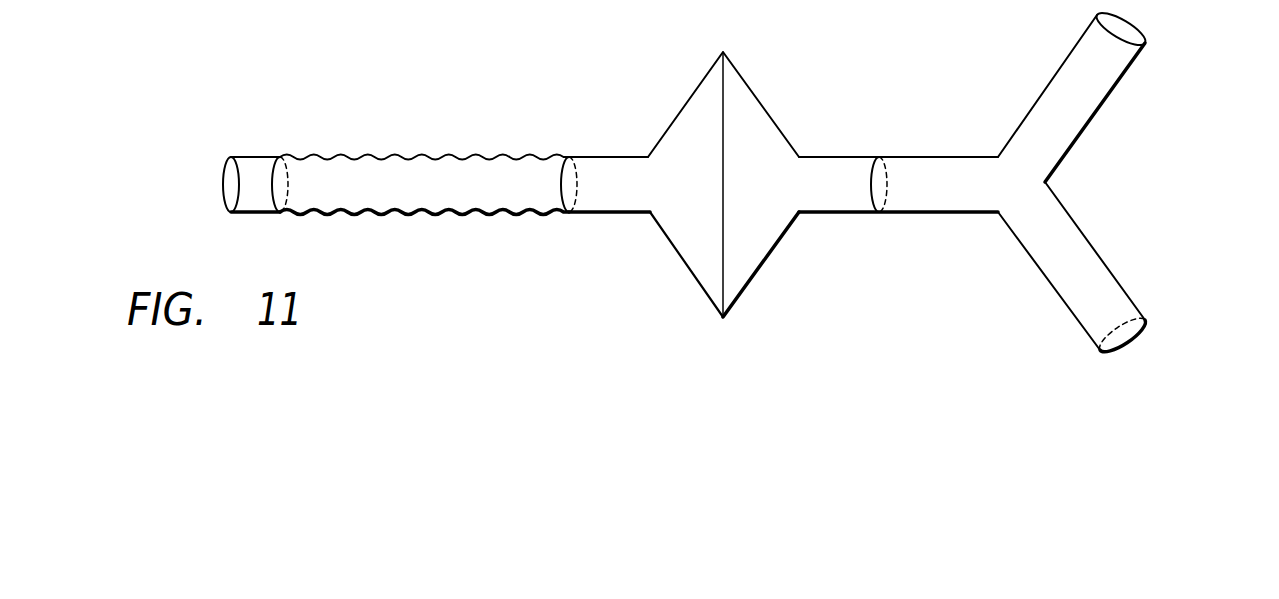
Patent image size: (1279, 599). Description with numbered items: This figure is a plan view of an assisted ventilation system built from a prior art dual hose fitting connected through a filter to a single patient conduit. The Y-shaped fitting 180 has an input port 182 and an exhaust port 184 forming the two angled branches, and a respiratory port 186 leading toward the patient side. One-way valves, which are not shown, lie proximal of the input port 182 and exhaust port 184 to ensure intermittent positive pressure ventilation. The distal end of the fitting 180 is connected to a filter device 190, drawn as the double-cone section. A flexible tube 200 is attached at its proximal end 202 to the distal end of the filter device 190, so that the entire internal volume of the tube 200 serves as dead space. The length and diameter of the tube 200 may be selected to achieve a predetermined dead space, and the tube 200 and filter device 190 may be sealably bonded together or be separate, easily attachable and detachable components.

The Y-shaped fitting 180 is at (1014, 185).
The input port 182 is at (1107, 48).
The exhaust port 184 is at (1135, 342).
The respiratory port 186 is at (879, 212).
The filter device 190 is at (705, 293).
The flexible tube 200 is at (362, 157).
The proximal end 202 is at (566, 157).